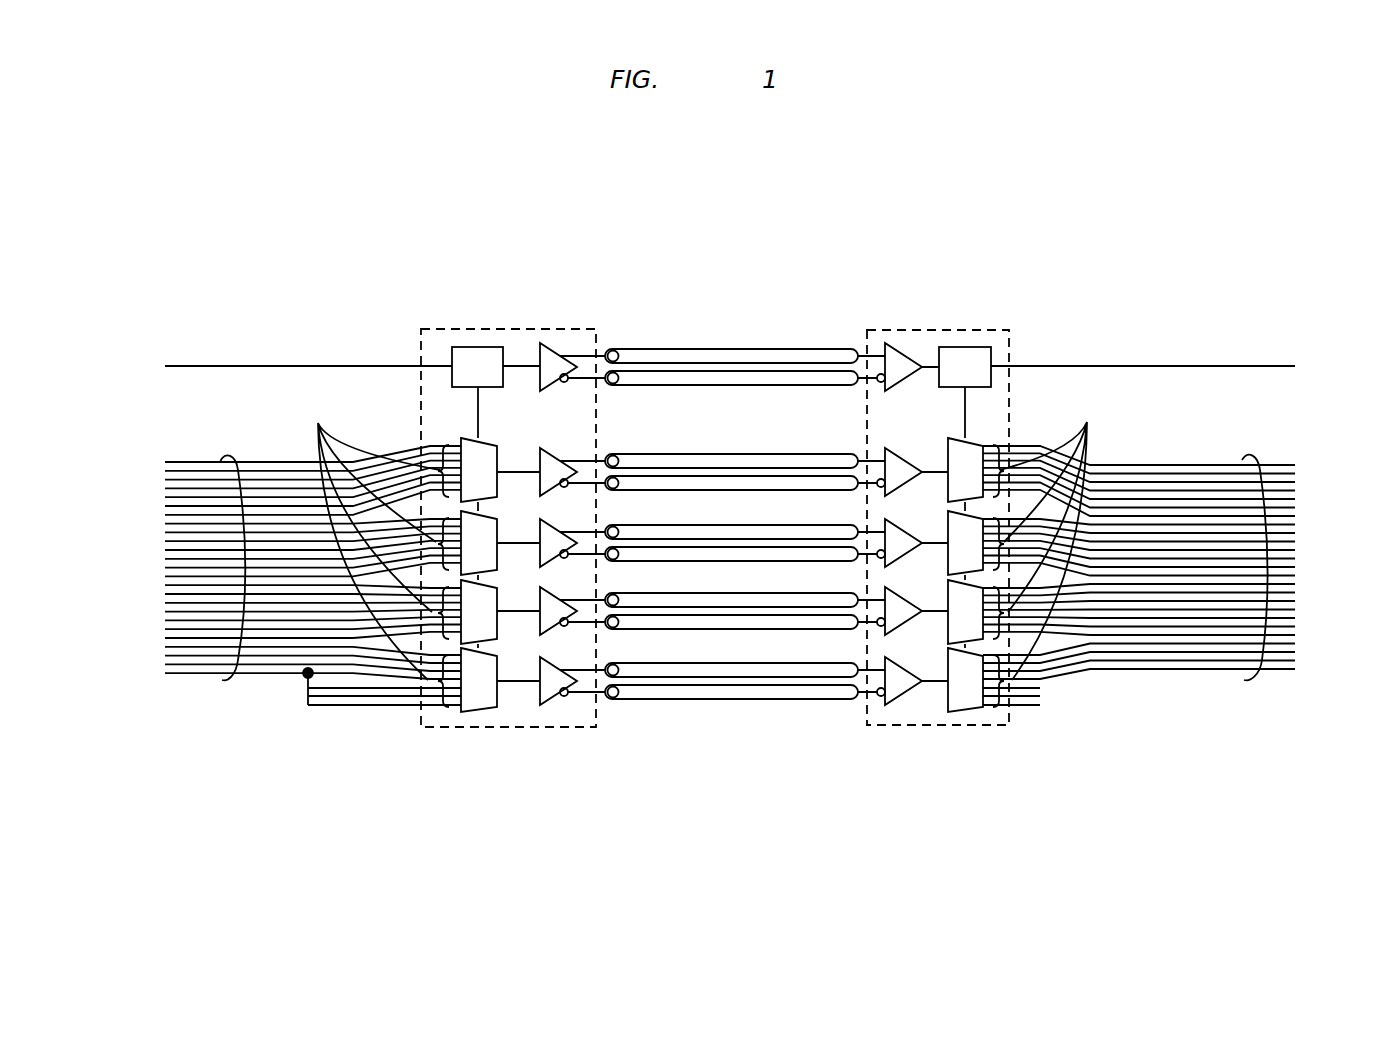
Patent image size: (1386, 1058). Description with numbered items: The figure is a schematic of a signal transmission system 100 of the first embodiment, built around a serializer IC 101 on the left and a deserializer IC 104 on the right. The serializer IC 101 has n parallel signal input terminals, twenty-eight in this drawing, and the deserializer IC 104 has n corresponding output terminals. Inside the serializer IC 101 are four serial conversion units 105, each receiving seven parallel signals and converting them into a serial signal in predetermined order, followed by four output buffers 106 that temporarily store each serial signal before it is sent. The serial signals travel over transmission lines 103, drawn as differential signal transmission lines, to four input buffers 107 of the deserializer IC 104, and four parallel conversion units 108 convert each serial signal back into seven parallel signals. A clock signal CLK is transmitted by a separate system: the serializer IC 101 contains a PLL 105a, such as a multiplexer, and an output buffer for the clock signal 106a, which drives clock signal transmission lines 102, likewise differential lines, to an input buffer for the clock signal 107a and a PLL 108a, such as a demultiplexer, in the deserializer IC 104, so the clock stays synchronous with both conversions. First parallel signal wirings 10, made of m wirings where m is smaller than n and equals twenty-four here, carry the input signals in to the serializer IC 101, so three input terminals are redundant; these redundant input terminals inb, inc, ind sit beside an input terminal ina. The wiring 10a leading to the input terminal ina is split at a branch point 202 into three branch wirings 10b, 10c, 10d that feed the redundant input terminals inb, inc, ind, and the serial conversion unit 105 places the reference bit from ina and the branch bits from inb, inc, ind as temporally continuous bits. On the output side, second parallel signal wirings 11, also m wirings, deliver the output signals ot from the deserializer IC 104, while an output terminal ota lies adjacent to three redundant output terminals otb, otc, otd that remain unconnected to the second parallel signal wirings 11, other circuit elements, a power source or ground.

The signal transmission system 100 is at (803, 232).
The serializer IC 101 is at (433, 328).
The deserializer IC 104 is at (945, 330).
The PLL 105a is at (478, 347).
The output buffer for the clock signal 106a is at (558, 343).
The input buffer for the clock signal 107a is at (893, 343).
The PLL 108a is at (990, 347).
The clock signal transmission lines 102 is at (672, 400).
The transmission lines 103 is at (665, 712).
The serial conversion unit 105 is at (484, 714).
The output buffer 106 is at (558, 703).
The input buffer 107 is at (900, 704).
The parallel conversion unit 108 is at (965, 712).
The first parallel signal wirings 10 is at (230, 682).
The wiring 10a is at (175, 682).
The branch wiring 10b is at (308, 692).
The branch wiring 10c is at (310, 700).
The branch wiring 10d is at (315, 708).
The branch point 202 is at (340, 724).
The second parallel signal wirings 11 is at (1245, 683).
The input terminal ina is at (440, 705).
The redundant input terminal inb is at (446, 705).
The redundant input terminal inc is at (451, 705).
The redundant input terminal ind is at (457, 705).
The output terminal ota is at (1012, 712).
The redundant output terminal otb is at (1005, 712).
The redundant output terminal otc is at (998, 712).
The redundant output terminal otd is at (990, 712).
The input signals in is at (363, 544).
The output signals ot is at (1060, 544).
The number of parallel signal wirings m is at (733, 556).
The number of input and output terminals n is at (715, 559).
The clock signal CLK is at (730, 350).